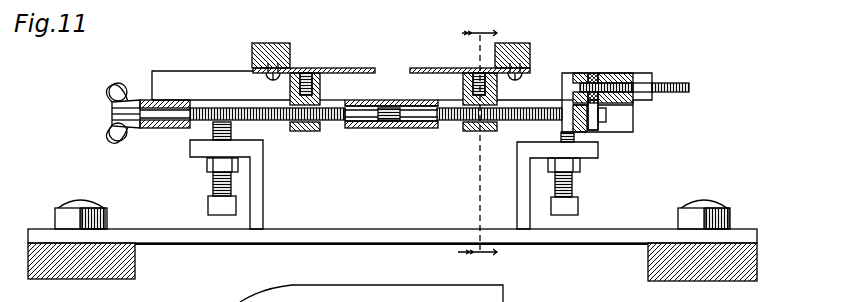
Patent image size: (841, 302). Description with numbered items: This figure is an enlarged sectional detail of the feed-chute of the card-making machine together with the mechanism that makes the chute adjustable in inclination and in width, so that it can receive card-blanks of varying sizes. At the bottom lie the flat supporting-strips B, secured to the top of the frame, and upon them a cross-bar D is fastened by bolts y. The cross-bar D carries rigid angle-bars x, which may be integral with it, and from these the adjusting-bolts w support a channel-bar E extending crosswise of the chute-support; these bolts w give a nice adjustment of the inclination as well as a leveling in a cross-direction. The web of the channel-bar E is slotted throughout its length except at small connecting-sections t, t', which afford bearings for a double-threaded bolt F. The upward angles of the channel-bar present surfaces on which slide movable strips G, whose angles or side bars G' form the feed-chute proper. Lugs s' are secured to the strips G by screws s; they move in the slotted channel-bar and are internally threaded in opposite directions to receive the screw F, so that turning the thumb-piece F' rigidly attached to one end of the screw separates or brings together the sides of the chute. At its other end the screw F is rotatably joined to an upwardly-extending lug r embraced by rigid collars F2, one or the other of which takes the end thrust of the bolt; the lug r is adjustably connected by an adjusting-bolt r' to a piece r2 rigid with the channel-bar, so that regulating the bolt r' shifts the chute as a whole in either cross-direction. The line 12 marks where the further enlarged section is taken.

The cross-bar D is at (392, 225).
The flat supporting-strips B is at (135, 265).
The bolts y is at (114, 210).
The angle-bars x is at (250, 185).
The adjusting-bolts w is at (212, 186).
The channel-bar E is at (212, 66).
The movable strips G is at (391, 54).
The angles or side bars G' is at (393, 50).
The lugs s' is at (393, 117).
The screws s is at (376, 97).
The connecting-section t is at (163, 132).
The thumb-piece F' is at (102, 113).
The connecting-section t' is at (391, 132).
The double-threaded bolt F is at (339, 139).
The rigid collars F2 is at (590, 125).
The upwardly-extending lug r is at (585, 74).
The piece r2 is at (617, 75).
The adjusting-bolt r' is at (646, 81).
The section line 12 is at (477, 145).